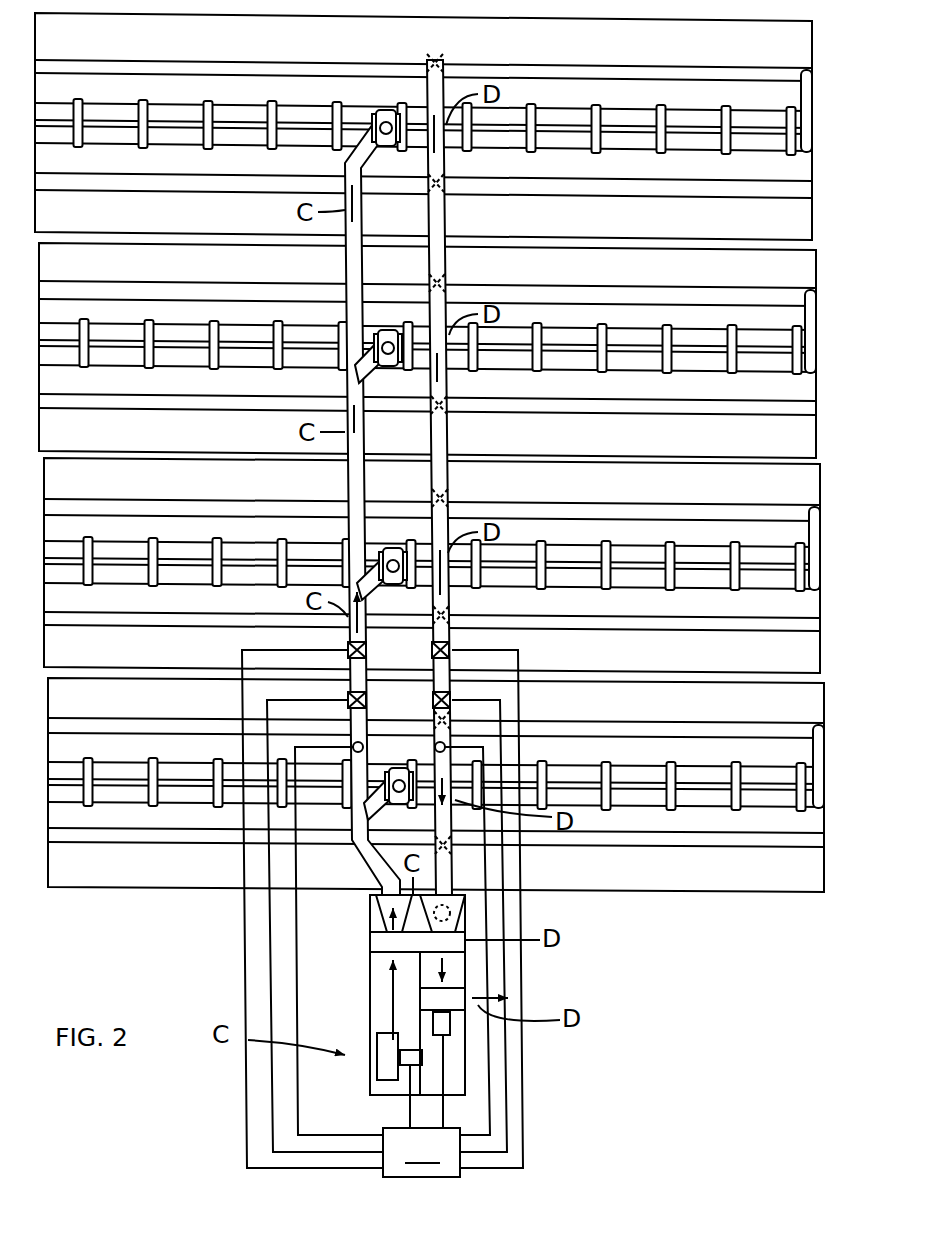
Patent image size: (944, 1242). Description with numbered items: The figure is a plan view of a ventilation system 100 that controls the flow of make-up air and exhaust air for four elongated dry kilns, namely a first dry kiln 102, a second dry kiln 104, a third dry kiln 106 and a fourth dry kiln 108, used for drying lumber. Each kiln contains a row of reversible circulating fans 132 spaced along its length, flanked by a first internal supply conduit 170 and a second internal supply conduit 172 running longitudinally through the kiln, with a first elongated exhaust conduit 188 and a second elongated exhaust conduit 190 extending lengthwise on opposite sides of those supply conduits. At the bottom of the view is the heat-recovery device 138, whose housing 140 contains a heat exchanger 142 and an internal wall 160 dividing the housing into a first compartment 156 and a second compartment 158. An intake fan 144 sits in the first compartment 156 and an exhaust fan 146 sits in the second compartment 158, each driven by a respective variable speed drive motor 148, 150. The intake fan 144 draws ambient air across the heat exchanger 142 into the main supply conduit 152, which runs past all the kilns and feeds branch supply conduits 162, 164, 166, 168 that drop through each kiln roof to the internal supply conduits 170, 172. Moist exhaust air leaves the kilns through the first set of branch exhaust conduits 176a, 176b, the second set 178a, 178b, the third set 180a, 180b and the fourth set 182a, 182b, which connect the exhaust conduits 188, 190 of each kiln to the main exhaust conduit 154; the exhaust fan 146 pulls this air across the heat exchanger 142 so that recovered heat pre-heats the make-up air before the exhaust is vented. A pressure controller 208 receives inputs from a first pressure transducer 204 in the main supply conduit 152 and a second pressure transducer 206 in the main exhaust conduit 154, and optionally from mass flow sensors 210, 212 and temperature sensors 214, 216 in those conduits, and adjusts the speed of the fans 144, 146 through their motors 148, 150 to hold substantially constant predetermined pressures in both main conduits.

The ventilation system 100 is at (94, 917).
The first dry kiln 102 is at (834, 777).
The second dry kiln 104 is at (830, 560).
The third dry kiln 106 is at (826, 345).
The fourth dry kiln 108 is at (822, 125).
The circulating fans 132 is at (661, 99).
The heat-recovery device 138 is at (545, 1003).
The housing 140 is at (370, 1032).
The heat exchanger 142 is at (382, 932).
The intake fan 144 is at (380, 1074).
The exhaust fan 146 is at (453, 1000).
The variable speed drive motor 148 is at (412, 1045).
The variable speed drive motor 150 is at (452, 1025).
The main supply conduit 152 is at (368, 866).
The main exhaust conduit 154 is at (470, 893).
The first compartment 156 is at (386, 942).
The second compartment 158 is at (458, 1053).
The internal wall 160 is at (420, 1085).
The branch supply conduit 162 is at (385, 765).
The branch supply conduit 164 is at (372, 548).
The branch supply conduit 166 is at (375, 378).
The branch supply conduit 168 is at (361, 108).
The first internal supply conduit 170 is at (807, 150).
The second internal supply conduit 172 is at (812, 62).
The branch exhaust conduit 176a is at (448, 846).
The branch exhaust conduit 176b is at (447, 720).
The branch exhaust conduit 178a is at (445, 612).
The branch exhaust conduit 178b is at (444, 498).
The branch exhaust conduit 180a is at (443, 405).
The branch exhaust conduit 180b is at (441, 283).
The branch exhaust conduit 182a is at (440, 185).
The branch exhaust conduit 182b is at (440, 62).
The first elongated exhaust conduit 188 is at (672, 196).
The second elongated exhaust conduit 190 is at (681, 68).
The first pressure transducer 204 is at (348, 650).
The second pressure transducer 206 is at (455, 647).
The pressure controller 208 is at (421, 1152).
The mass flow sensor 210 is at (348, 700).
The mass flow sensor 212 is at (452, 698).
The temperature sensor 214 is at (352, 747).
The temperature sensor 216 is at (447, 747).